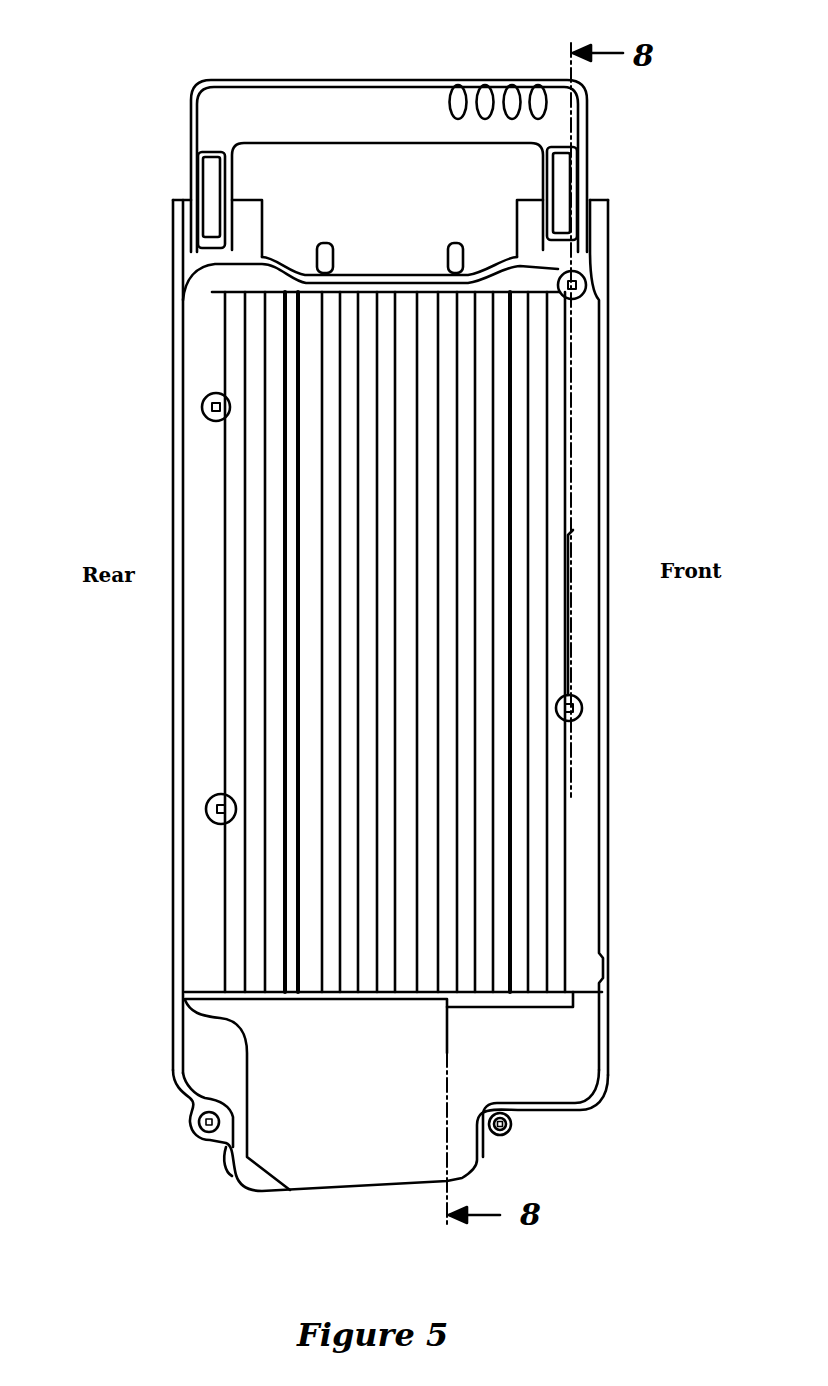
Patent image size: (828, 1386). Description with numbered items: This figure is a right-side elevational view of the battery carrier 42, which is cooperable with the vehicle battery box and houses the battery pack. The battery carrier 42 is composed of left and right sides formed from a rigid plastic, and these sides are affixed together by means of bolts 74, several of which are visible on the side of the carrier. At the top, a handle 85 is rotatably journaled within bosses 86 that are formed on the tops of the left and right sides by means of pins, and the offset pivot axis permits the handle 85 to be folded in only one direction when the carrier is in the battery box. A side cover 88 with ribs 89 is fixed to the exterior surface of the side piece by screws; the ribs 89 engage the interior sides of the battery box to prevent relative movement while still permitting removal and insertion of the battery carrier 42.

The battery carrier 42 is at (126, 236).
The bolts 74 is at (586, 283).
The handle 85 is at (247, 78).
The bosses 86 is at (170, 212).
The side covers 88 is at (288, 933).
The ribs 89 is at (515, 907).